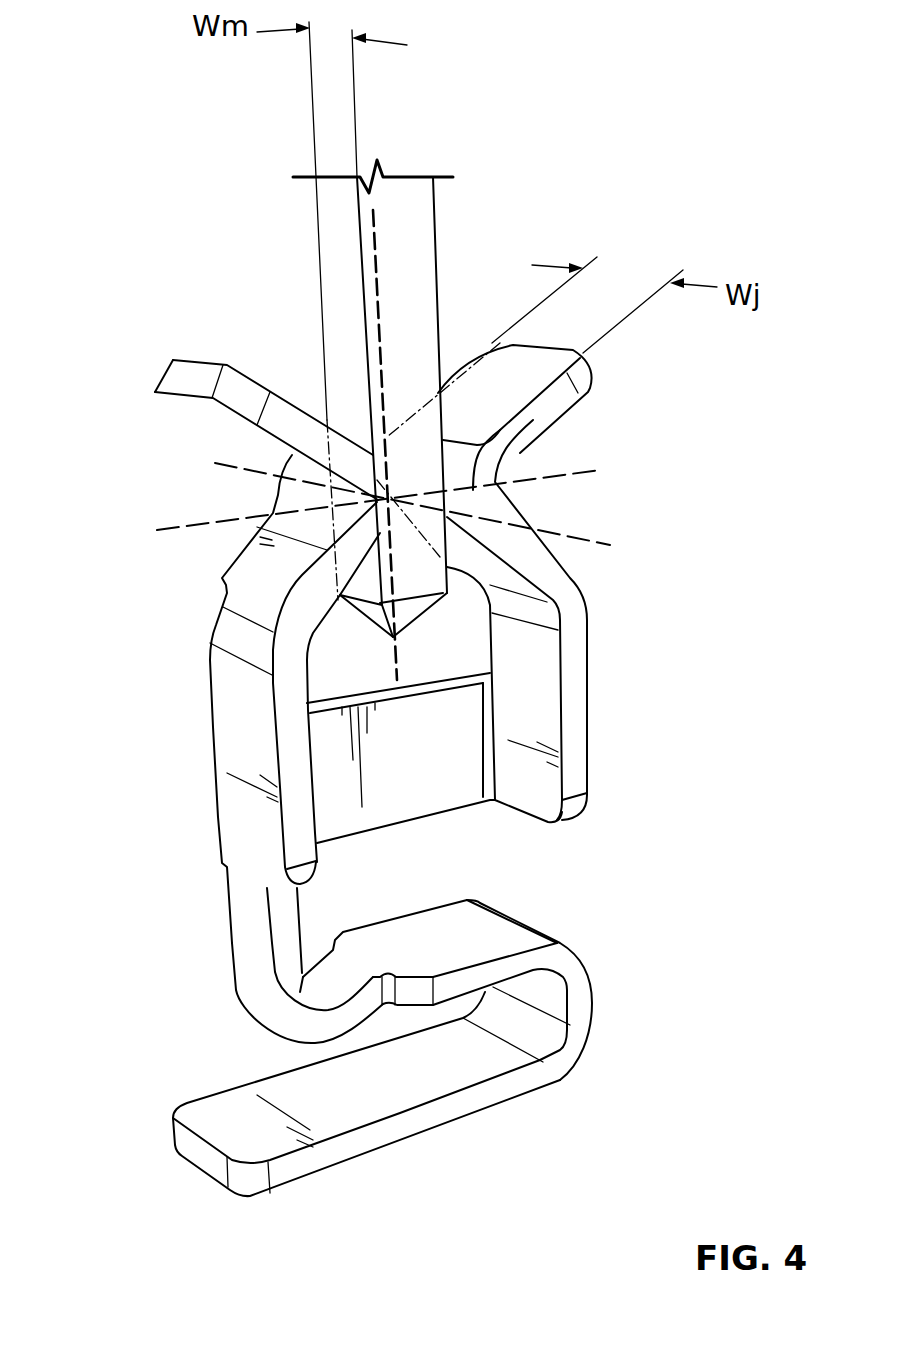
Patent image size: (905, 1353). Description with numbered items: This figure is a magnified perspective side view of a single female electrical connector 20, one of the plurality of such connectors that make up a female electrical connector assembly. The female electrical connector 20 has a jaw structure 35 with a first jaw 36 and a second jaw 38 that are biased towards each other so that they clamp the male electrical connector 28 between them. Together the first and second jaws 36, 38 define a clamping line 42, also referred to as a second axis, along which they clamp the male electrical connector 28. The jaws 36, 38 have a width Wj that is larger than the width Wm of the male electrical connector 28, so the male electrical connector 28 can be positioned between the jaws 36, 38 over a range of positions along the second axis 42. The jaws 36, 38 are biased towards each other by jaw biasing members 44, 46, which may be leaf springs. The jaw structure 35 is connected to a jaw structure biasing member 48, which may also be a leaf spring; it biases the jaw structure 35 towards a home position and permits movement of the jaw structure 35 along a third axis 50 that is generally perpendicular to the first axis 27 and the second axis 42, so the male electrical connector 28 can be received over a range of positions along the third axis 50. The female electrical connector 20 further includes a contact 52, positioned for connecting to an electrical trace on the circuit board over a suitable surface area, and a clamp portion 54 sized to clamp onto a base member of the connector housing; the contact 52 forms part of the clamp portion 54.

The female electrical connector 20 is at (662, 667).
The first axis 27 is at (372, 245).
The male electrical connector 28 is at (417, 235).
The jaw structure 35 is at (114, 700).
The first jaw 36 is at (580, 377).
The second jaw 38 is at (177, 373).
The clamping line 42 is at (230, 463).
The jaw biasing member 44 is at (577, 590).
The jaw biasing member 46 is at (253, 613).
The jaw structure biasing member 48 is at (245, 990).
The third axis 50 is at (593, 478).
The contact 52 is at (410, 1143).
The clamp portion 54 is at (628, 965).